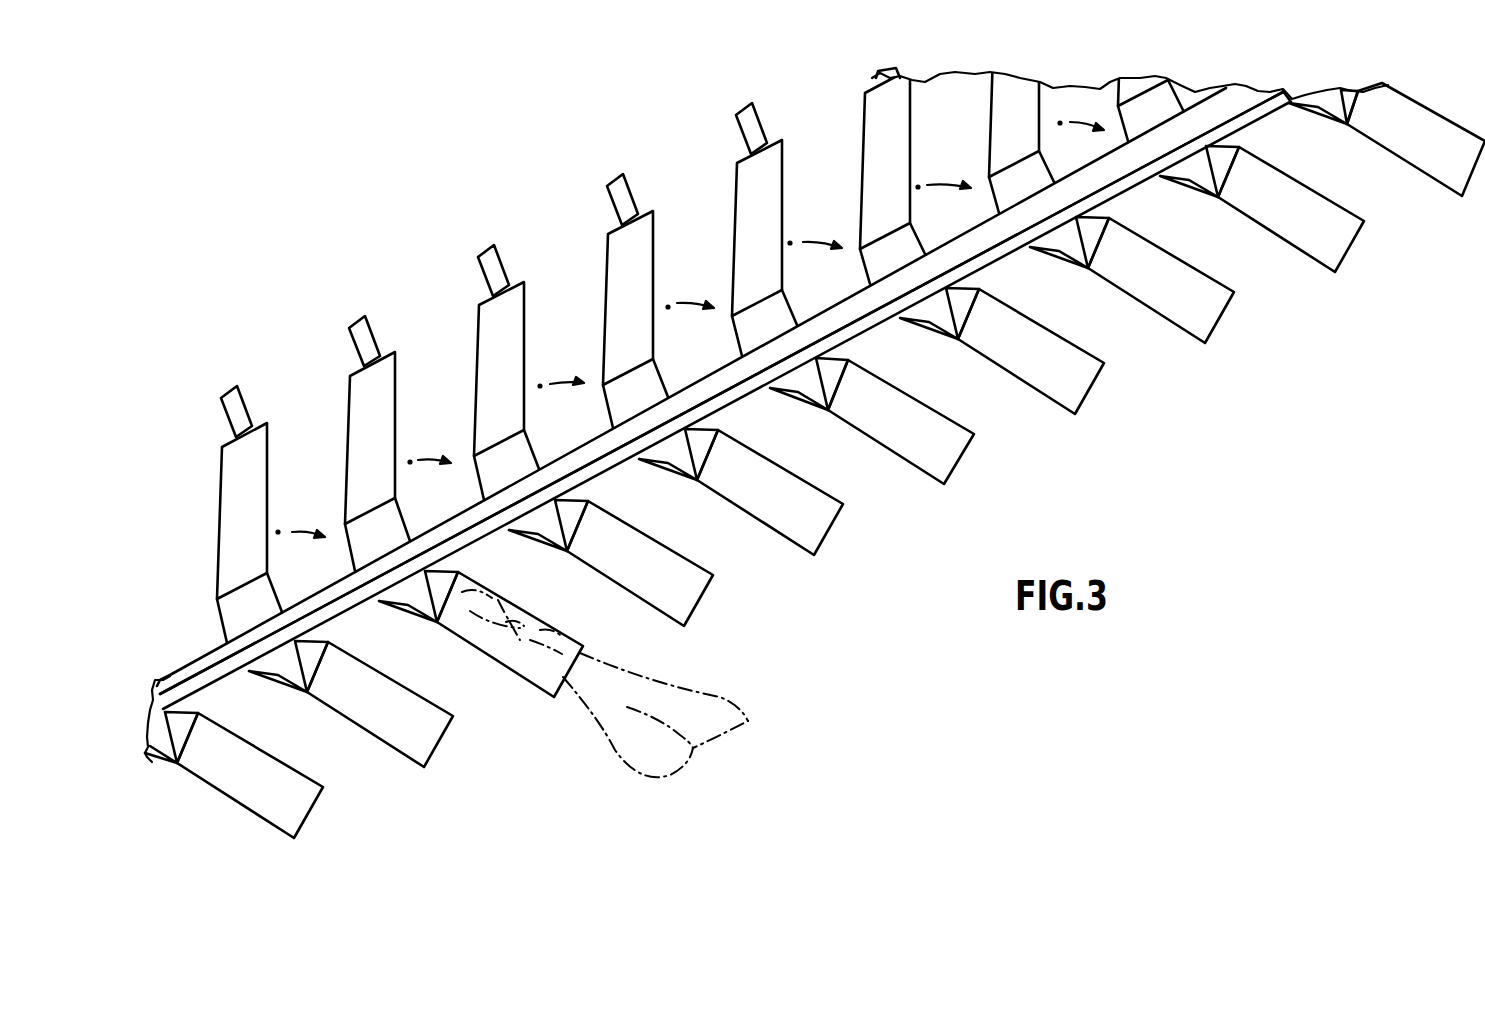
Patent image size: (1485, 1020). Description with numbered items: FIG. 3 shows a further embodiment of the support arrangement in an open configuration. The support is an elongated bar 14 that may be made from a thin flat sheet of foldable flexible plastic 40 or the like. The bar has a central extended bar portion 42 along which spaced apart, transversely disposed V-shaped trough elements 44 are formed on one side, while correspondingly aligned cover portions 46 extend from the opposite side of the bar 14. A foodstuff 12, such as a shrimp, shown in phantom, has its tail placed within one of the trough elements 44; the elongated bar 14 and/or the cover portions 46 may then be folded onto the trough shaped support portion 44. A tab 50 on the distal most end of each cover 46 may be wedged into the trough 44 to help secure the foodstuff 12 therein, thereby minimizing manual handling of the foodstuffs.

The foodstuffs 12 is at (746, 721).
The elongated bar 14 is at (709, 360).
The foldable flexible plastic 40 is at (596, 435).
The central extended bar portion 42 is at (848, 309).
The V-shaped trough elements 44 is at (273, 755).
The cover portions 46 is at (264, 477).
The tab 50 is at (243, 409).